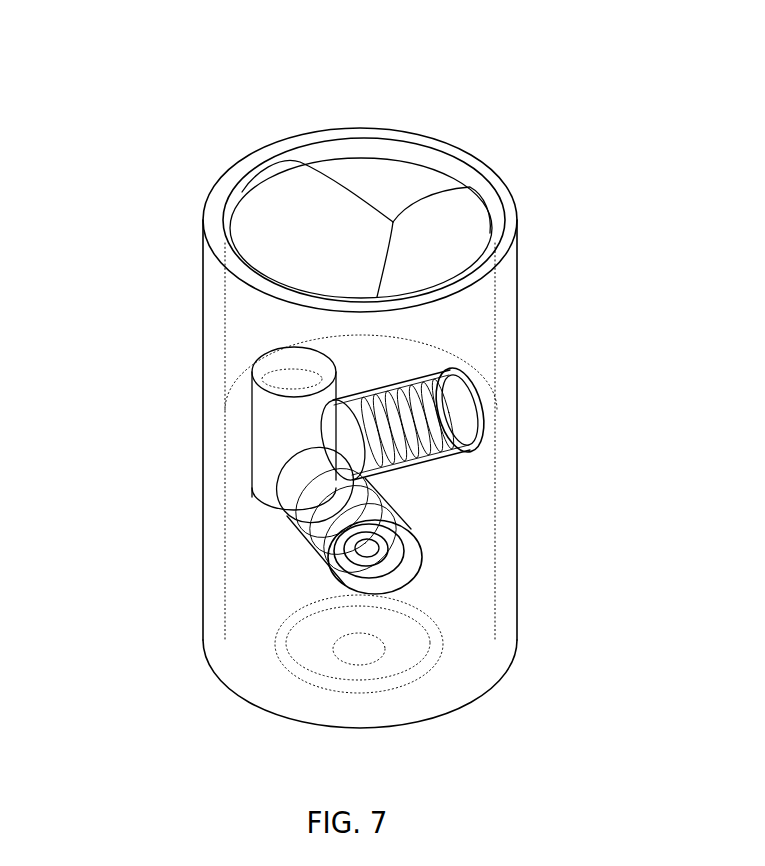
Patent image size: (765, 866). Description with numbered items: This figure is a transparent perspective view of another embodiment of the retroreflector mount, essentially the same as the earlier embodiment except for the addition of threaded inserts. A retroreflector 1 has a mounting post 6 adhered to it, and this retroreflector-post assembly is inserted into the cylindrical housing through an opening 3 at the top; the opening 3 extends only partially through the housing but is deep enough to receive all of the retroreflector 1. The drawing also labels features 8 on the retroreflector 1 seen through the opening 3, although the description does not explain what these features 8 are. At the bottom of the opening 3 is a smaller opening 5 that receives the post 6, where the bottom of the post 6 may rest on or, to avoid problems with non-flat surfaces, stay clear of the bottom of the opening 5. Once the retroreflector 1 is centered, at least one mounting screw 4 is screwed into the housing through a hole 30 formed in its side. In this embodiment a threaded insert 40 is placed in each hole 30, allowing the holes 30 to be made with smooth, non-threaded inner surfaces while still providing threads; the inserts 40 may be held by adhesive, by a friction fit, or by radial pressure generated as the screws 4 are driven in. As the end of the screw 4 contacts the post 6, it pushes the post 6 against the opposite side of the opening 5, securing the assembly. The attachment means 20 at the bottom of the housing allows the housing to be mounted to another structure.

The opening 3 is at (388, 95).
The retroreflector 1 is at (470, 193).
The valve leaflets 8 is at (323, 208).
The mounting post 6 is at (267, 407).
The smaller opening 5 is at (250, 458).
The hole 30 is at (425, 377).
The threaded insert 40 is at (452, 370).
The mounting screw 4 is at (430, 428).
The attachment means 20 is at (377, 633).